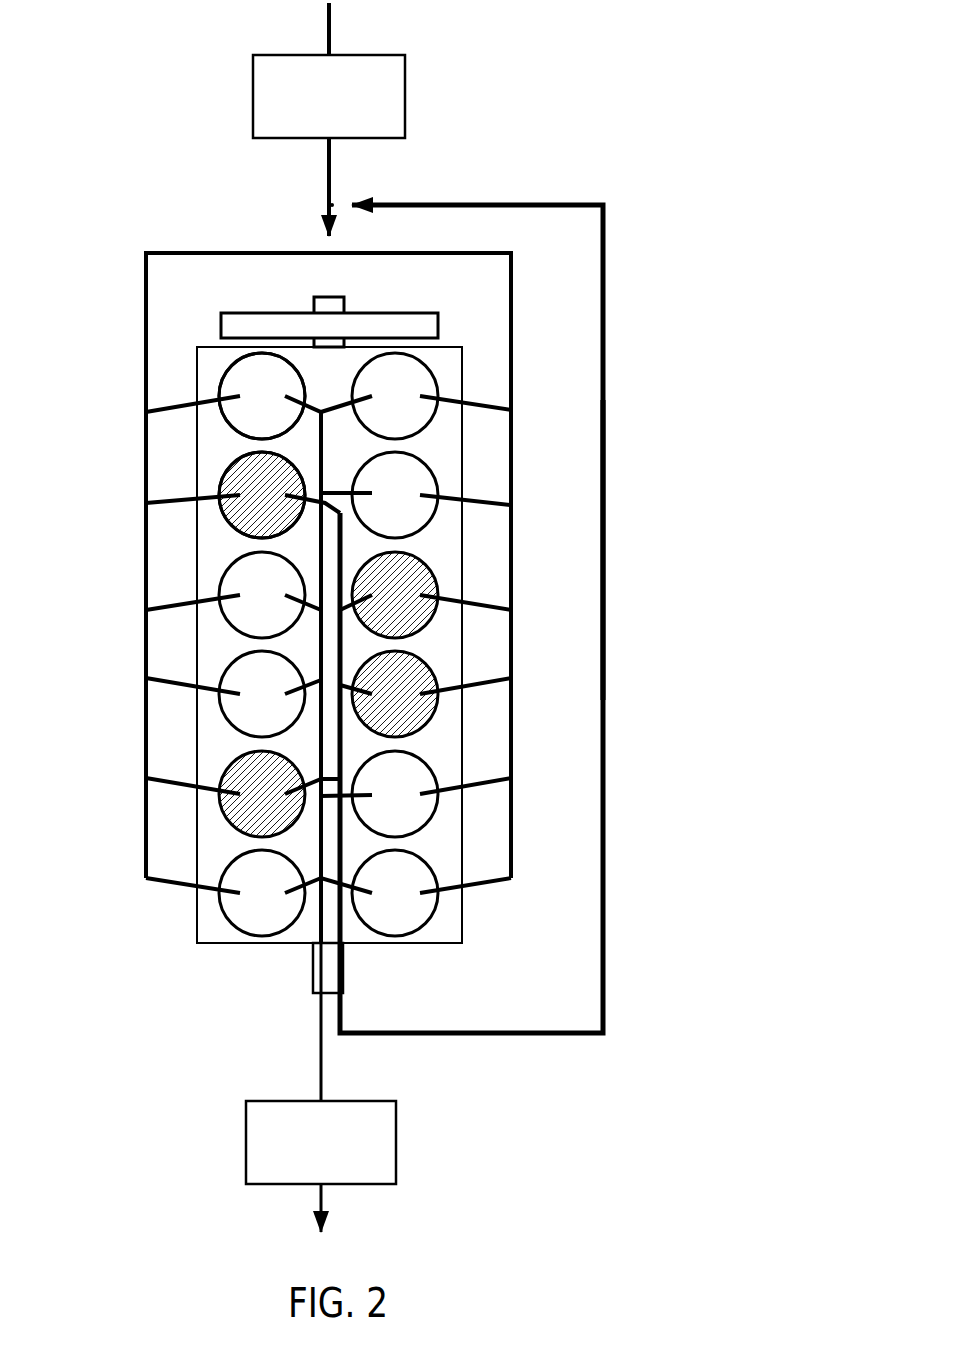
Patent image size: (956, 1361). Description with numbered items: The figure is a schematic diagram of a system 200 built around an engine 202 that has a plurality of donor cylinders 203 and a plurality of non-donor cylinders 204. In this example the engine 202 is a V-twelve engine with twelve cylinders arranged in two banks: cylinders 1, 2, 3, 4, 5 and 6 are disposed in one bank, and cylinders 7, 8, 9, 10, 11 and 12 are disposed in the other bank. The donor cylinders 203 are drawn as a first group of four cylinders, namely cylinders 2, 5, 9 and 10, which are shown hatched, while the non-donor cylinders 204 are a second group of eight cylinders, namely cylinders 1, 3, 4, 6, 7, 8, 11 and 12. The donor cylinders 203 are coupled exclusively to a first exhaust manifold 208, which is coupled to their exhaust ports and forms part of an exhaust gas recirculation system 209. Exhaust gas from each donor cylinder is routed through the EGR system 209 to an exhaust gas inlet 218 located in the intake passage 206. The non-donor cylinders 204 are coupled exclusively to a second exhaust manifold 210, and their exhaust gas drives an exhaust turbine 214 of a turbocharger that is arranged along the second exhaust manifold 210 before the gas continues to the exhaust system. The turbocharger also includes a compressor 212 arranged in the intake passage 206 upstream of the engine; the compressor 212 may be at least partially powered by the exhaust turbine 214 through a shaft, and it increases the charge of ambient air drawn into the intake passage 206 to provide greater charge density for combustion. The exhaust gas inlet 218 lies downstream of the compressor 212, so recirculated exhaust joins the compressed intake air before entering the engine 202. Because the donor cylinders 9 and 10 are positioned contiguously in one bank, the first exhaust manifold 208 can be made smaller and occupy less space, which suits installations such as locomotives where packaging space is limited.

The system 200 is at (514, 52).
The engine 202 is at (192, 957).
The donor cylinders 203 is at (222, 478).
The non-donor cylinders 204 is at (222, 390).
The intake passage 206 is at (329, 232).
The first exhaust manifold 208 is at (398, 1038).
The exhaust gas recirculation (EGR) system 209 is at (630, 526).
The second exhaust manifold 210 is at (321, 1068).
The compressor 212 is at (329, 70).
The exhaust turbine 214 is at (321, 1166).
The exhaust gas inlet 218 is at (338, 200).
The cylinder 1 is at (262, 893).
The cylinder 2 is at (262, 794).
The cylinder 3 is at (262, 694).
The cylinder 4 is at (262, 595).
The cylinder 5 is at (262, 495).
The cylinder 6 is at (262, 396).
The cylinder 7 is at (395, 893).
The cylinder 8 is at (395, 794).
The cylinder 9 is at (395, 694).
The cylinder 10 is at (395, 595).
The cylinder 11 is at (395, 495).
The cylinder 12 is at (395, 396).